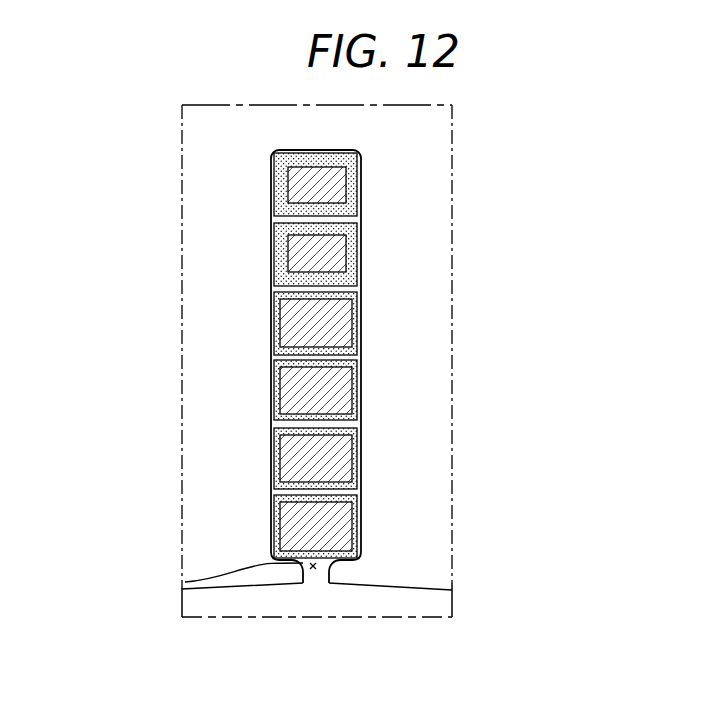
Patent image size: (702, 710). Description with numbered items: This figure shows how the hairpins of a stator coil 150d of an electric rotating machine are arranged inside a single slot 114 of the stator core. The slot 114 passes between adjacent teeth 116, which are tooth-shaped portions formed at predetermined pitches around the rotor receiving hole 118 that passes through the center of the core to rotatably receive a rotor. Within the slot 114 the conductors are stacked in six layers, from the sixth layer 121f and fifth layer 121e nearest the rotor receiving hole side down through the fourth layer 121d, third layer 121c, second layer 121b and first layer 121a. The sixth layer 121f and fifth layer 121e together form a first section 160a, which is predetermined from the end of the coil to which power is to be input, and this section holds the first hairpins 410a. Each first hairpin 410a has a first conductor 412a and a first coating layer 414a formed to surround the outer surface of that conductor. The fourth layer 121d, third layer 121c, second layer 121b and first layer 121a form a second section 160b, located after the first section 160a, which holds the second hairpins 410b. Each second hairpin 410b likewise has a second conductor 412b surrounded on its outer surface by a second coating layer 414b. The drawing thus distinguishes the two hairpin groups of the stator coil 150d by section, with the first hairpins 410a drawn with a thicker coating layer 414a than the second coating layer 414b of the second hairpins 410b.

The stator coil 150d is at (205, 129).
The first section 160a is at (112, 168).
The second section 160b is at (112, 308).
The first layer 121a is at (271, 495).
The second layer 121b is at (271, 428).
The third layer 121c is at (271, 360).
The fourth layer 121d is at (271, 292).
The fifth layer 121e is at (271, 223).
The sixth layer 121f is at (271, 153).
The first hairpin 410a is at (508, 145).
The first conductor 412a is at (322, 242).
The first coating layer 414a is at (357, 243).
The second hairpin 410b is at (508, 323).
The second conductor 412b is at (337, 508).
The second coating layer 414b is at (278, 325).
The slot 114 is at (185, 583).
The tooth 116 is at (367, 578).
The rotor receiving hole 118 is at (224, 606).